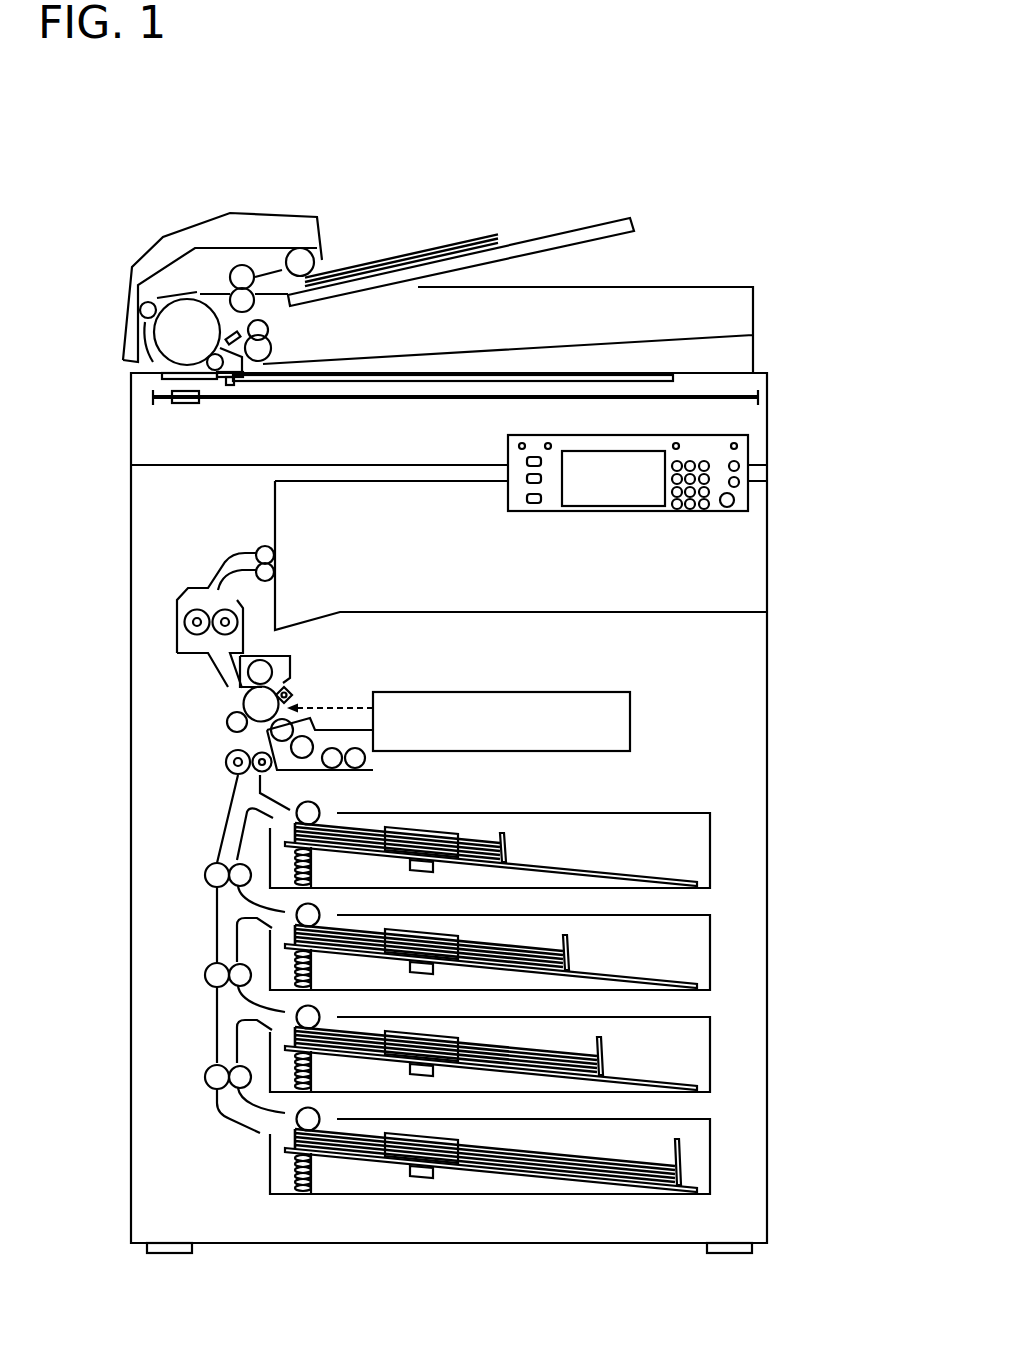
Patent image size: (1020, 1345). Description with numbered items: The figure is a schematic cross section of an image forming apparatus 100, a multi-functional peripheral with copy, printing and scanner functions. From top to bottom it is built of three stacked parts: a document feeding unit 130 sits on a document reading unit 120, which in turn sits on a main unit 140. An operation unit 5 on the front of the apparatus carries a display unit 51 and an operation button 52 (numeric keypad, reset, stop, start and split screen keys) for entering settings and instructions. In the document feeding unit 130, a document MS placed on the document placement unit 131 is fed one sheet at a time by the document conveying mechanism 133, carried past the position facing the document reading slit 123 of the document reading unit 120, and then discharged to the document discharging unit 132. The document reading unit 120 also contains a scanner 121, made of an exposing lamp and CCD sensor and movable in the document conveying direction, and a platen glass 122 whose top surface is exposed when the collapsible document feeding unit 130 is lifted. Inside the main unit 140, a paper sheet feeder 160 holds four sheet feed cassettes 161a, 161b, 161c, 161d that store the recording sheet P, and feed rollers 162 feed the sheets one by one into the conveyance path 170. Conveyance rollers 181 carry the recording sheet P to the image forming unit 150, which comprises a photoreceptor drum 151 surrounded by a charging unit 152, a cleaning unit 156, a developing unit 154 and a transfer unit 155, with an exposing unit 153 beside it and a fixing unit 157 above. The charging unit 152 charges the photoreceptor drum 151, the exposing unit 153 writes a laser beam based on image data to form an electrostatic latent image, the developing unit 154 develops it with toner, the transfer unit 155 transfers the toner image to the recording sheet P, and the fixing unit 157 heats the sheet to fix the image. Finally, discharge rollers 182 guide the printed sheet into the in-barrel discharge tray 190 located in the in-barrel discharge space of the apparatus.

The image forming apparatus 100 is at (130, 197).
The document feeding unit 130 is at (438, 254).
The document conveying mechanism 133 is at (253, 213).
The document MS is at (457, 233).
The document placement unit 131 is at (605, 218).
The document discharging unit 132 is at (523, 347).
The platen glass 122 is at (598, 375).
The document reading unit 120 is at (492, 395).
The scanner 121 is at (190, 403).
The document reading slit 123 is at (197, 375).
The operation unit 5 is at (659, 494).
The display unit 51 is at (608, 498).
The operation button 52 is at (690, 508).
The discharge rollers 182 is at (268, 554).
The fixing unit 157 is at (243, 617).
The in-barrel discharge tray 190 is at (485, 610).
The cleaning unit 156 is at (282, 658).
The image forming unit 150 is at (393, 674).
The charging unit 152 is at (287, 688).
The photoreceptor drum 151 is at (250, 700).
The transfer unit 155 is at (230, 720).
The conveyance rollers 181 is at (227, 762).
The conveyance path 170 is at (211, 940).
The developing unit 154 is at (370, 763).
The exposing unit 153 is at (592, 745).
The main unit 140 is at (770, 684).
The paper sheet feeder 160 is at (556, 955).
The sheet feed cassette 161a is at (710, 855).
The sheet feed cassette 161b is at (710, 957).
The sheet feed cassette 161c is at (710, 1059).
The sheet feed cassette 161d is at (710, 1160).
The feed rollers 162 is at (310, 813).
The recording sheet P is at (467, 833).